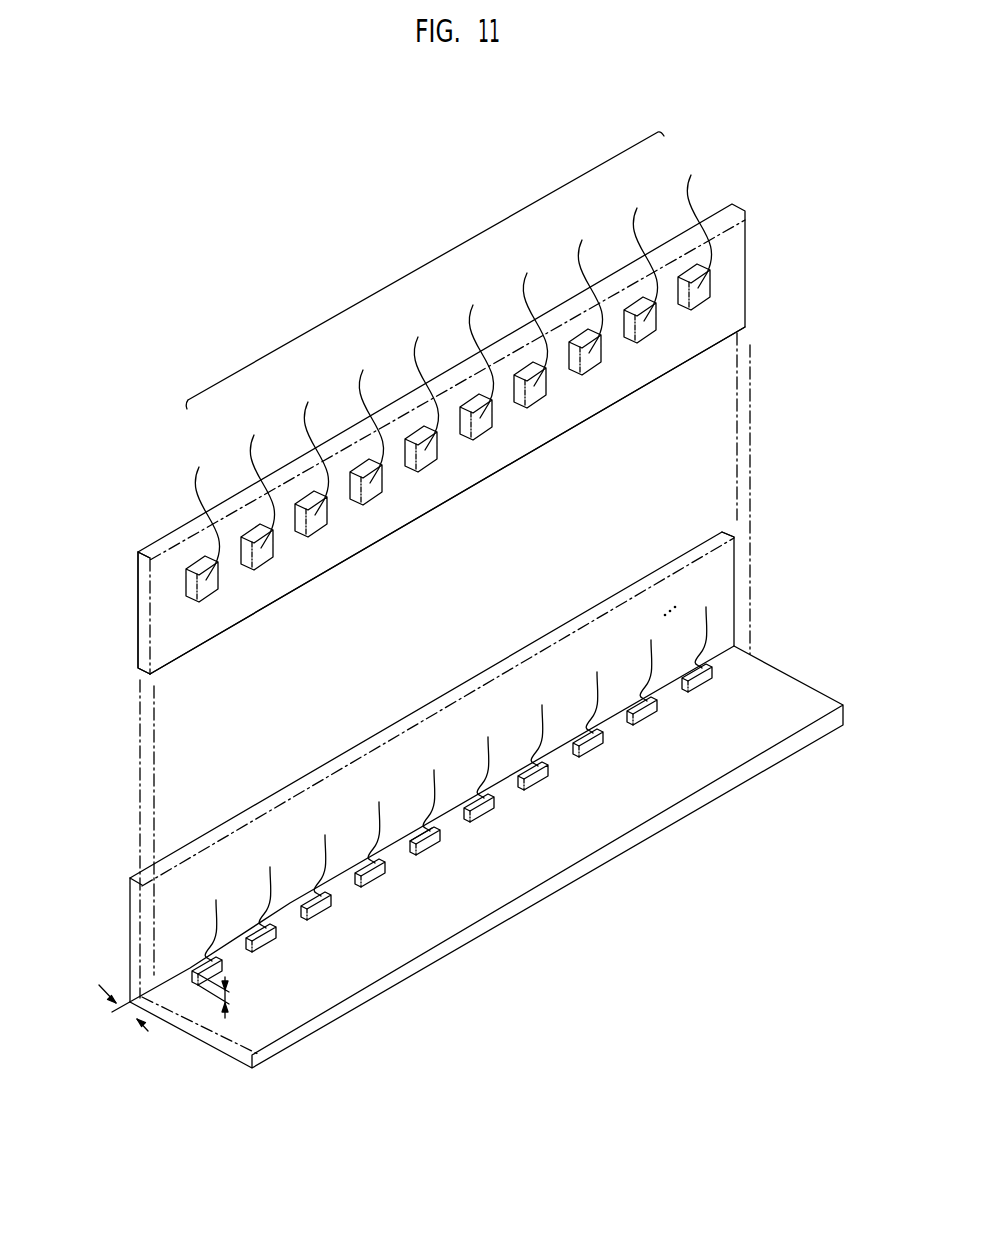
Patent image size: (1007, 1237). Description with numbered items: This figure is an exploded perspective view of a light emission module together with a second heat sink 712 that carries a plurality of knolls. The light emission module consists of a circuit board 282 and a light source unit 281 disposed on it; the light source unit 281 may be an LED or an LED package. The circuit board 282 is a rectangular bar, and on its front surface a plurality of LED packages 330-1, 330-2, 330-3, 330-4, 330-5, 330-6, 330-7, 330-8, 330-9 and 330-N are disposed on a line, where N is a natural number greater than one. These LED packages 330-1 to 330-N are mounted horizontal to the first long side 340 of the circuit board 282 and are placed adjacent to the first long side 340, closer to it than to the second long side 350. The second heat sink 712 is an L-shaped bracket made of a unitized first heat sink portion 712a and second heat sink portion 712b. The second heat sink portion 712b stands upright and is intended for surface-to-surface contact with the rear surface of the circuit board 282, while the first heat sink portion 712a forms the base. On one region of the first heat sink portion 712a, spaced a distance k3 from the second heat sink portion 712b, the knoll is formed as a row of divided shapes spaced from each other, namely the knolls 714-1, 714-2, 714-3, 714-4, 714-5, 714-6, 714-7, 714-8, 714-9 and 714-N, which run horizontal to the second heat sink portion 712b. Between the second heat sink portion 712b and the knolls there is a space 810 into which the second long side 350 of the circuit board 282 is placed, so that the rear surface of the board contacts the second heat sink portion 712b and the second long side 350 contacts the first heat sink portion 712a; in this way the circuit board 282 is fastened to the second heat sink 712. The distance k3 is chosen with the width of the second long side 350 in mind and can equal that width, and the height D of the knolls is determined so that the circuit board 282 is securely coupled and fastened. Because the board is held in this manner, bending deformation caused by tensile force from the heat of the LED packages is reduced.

The light source unit 281 is at (430, 265).
The circuit board 282 is at (147, 617).
The LED package 330-1 is at (202, 523).
The LED package 330-2 is at (257, 491).
The LED package 330-3 is at (311, 458).
The LED package 330-4 is at (366, 426).
The LED package 330-5 is at (421, 393).
The LED package 330-6 is at (476, 361).
The LED package 330-7 is at (530, 329).
The LED package 330-8 is at (585, 296).
The LED package 330-9 is at (640, 264).
The LED package 330-N is at (694, 231).
The first long side 340 is at (185, 533).
The second long side 350 is at (252, 617).
The second heat sink 712 is at (469, 800).
The first heat sink portion 712a is at (432, 921).
The second heat sink portion 712b is at (131, 905).
The knoll 714-1 is at (216, 932).
The knoll 714-2 is at (270, 899).
The knoll 714-3 is at (325, 867).
The knoll 714-4 is at (379, 834).
The knoll 714-5 is at (434, 802).
The knoll 714-6 is at (488, 769).
The knoll 714-7 is at (542, 737).
The knoll 714-8 is at (597, 704).
The knoll 714-9 is at (651, 672).
The knoll 714-N is at (706, 639).
The space 810 is at (418, 822).
The height of the knoll D is at (221, 996).
The distance k3 is at (123, 1009).